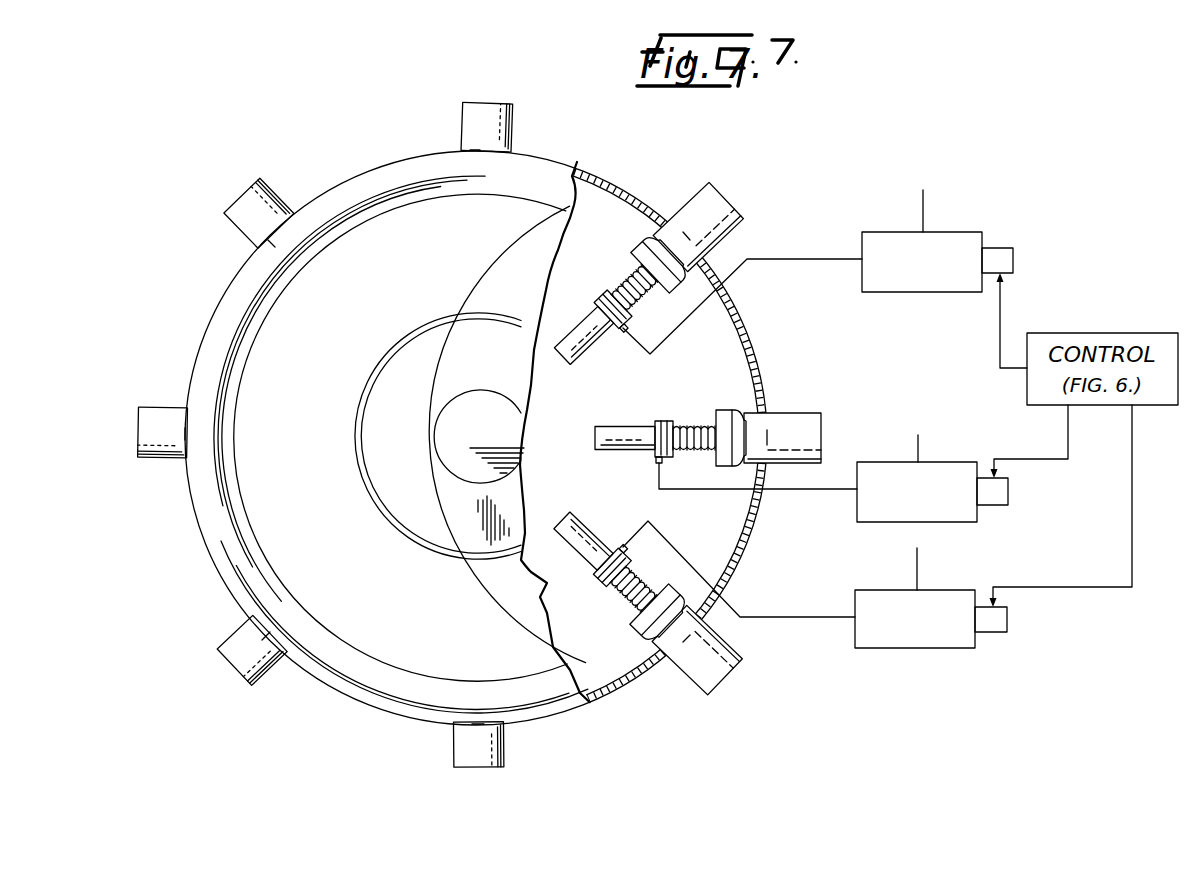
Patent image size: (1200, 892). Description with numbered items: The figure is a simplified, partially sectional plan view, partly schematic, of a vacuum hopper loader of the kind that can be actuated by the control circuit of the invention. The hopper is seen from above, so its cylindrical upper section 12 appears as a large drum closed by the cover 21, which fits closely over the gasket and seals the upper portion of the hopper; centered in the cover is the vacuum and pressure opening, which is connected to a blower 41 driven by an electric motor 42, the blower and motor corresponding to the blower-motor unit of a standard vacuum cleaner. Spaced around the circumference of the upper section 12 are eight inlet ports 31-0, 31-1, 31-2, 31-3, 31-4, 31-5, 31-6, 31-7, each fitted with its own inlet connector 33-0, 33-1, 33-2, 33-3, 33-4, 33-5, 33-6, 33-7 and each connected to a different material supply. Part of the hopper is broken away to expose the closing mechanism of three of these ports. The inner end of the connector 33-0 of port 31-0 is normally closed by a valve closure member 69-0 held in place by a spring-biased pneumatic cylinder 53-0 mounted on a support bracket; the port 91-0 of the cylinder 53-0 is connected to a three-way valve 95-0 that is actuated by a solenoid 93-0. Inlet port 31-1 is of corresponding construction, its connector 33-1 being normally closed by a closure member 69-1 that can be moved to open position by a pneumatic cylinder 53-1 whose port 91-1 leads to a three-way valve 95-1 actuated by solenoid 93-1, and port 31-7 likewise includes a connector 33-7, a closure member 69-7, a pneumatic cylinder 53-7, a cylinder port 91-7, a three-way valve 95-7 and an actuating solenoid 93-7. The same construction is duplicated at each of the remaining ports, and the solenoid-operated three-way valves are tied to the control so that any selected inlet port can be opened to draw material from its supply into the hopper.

The cylindrical upper section 12 is at (622, 150).
The cover 21 is at (253, 487).
The blower 41 is at (377, 478).
The electric motor 42 is at (450, 408).
The inlet port 31-0 is at (852, 415).
The inlet port 31-1 is at (683, 178).
The inlet port 31-2 is at (457, 142).
The inlet port 31-3 is at (236, 208).
The inlet port 31-4 is at (136, 432).
The inlet port 31-5 is at (229, 667).
The inlet port 31-6 is at (478, 768).
The inlet port 31-7 is at (717, 688).
The connector 33-0 is at (828, 376).
The inlet connector 33-1 is at (711, 193).
The inlet connector 33-2 is at (498, 82).
The inlet connector 33-3 is at (284, 166).
The inlet connector 33-4 is at (148, 407).
The inlet connector 33-5 is at (230, 640).
The inlet connector 33-6 is at (452, 751).
The connector 33-7 is at (697, 673).
The spring-biased pneumatic cylinder 53-0 is at (612, 426).
The pneumatic cylinder 53-1 is at (574, 334).
The pneumatic cylinder 53-7 is at (568, 538).
The valve closure member 69-0 is at (735, 414).
The closure member 69-1 is at (647, 252).
The closure member 69-7 is at (645, 627).
The port 91-0 is at (656, 456).
The port 91-1 is at (612, 353).
The cylinder port 91-7 is at (618, 546).
The solenoid 93-0 is at (1000, 506).
The solenoid 93-1 is at (1015, 259).
The actuating solenoid 93-7 is at (995, 633).
The three-way valve 95-0 is at (950, 462).
The three-way valve 95-1 is at (952, 232).
The three-way valve 95-7 is at (885, 649).